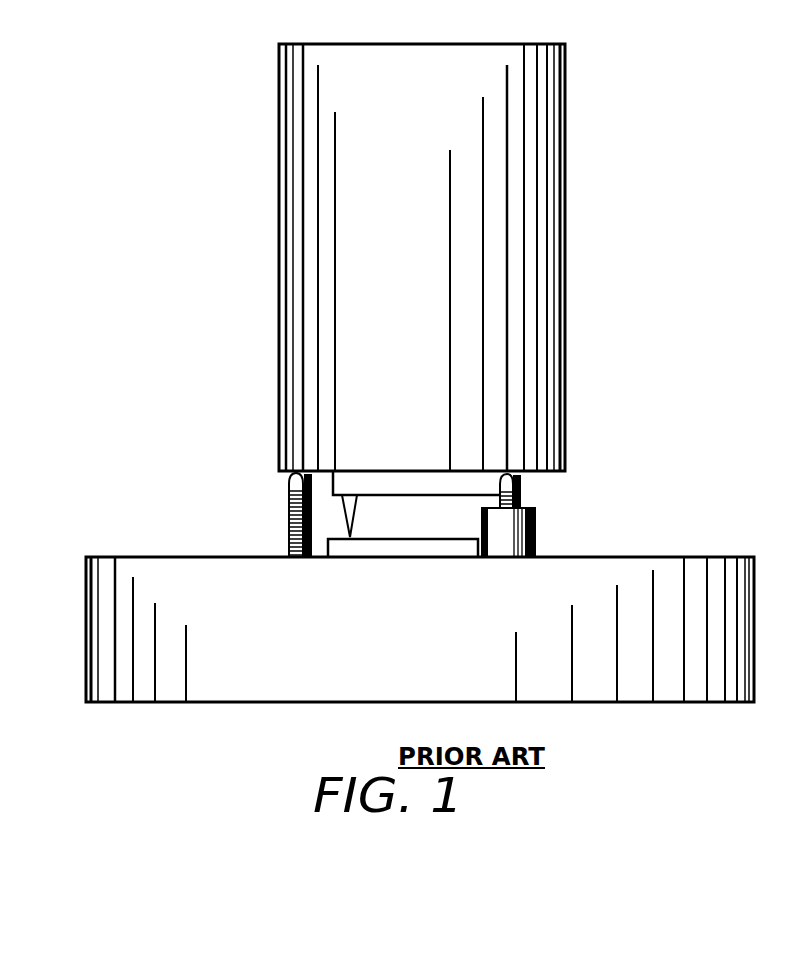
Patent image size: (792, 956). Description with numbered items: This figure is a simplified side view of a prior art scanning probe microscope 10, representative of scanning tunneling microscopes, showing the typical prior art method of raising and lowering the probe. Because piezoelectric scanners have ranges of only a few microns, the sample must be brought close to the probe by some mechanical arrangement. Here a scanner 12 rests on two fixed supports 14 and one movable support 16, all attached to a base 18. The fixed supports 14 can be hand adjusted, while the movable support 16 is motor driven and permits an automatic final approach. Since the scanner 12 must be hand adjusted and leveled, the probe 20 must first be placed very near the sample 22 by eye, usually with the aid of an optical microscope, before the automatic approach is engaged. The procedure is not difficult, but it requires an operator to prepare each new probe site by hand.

The scanning probe microscope 10 is at (620, 235).
The scanner 12 is at (538, 327).
The fixed supports 14 is at (535, 538).
The movable support 16 is at (288, 517).
The base 18 is at (198, 555).
The probe 20 is at (355, 517).
The sample 22 is at (395, 548).